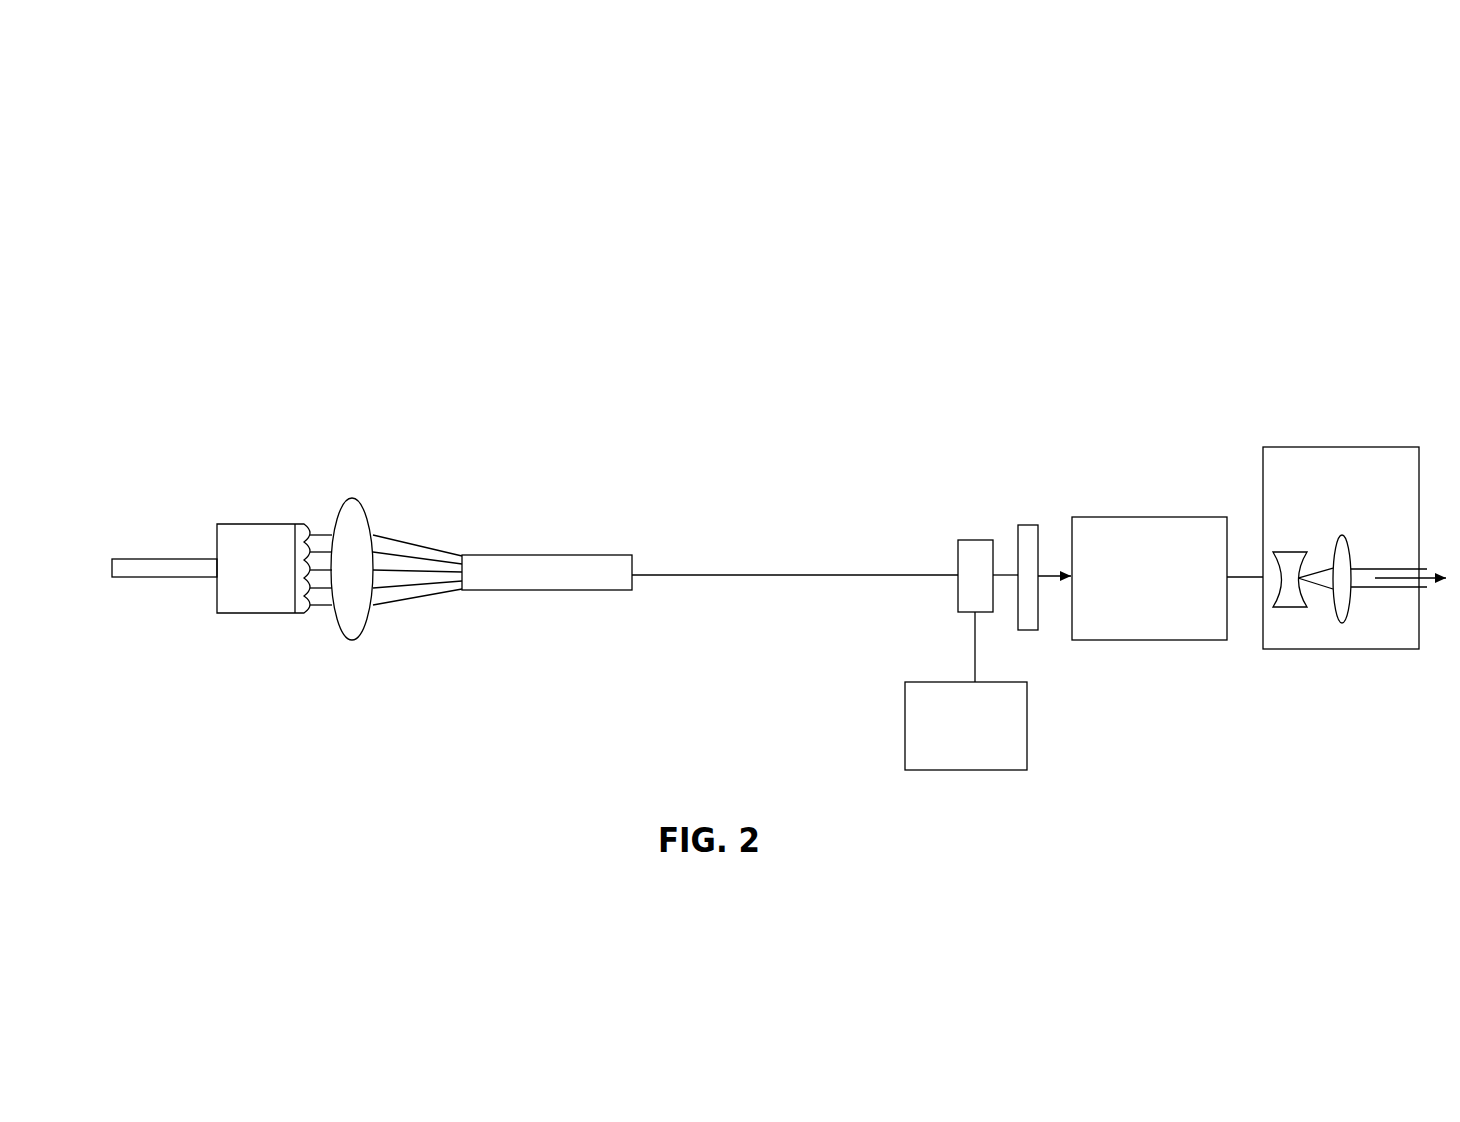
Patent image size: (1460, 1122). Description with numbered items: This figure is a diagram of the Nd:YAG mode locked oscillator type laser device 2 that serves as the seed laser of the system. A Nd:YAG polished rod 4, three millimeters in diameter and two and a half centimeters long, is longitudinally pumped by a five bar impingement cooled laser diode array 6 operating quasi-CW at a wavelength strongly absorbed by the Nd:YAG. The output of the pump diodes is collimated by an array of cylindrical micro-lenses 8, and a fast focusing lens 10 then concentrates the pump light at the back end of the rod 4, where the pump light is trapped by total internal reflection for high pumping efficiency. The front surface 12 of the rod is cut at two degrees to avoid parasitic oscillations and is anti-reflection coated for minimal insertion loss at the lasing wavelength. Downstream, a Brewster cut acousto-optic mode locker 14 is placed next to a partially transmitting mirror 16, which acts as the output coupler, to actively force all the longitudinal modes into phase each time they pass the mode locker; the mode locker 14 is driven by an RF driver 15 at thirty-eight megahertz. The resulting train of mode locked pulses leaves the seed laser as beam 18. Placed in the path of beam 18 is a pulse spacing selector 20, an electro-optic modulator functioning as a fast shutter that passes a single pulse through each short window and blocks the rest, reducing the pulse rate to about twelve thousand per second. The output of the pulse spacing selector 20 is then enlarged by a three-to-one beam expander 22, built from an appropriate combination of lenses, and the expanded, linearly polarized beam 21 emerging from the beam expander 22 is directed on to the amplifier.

The Nd:YAG mode locked oscillator type laser device 2 is at (858, 360).
The Nd:YAG polished rod 4 is at (528, 592).
The laser diode array 6 is at (263, 523).
The array of cylindrical micro-lenses 8 is at (306, 629).
The fast focusing lens 10 is at (366, 508).
The front surface 12 is at (643, 543).
The acousto-optic mode locker 14 is at (973, 540).
The RF driver 15 is at (893, 730).
The partially transmitting mirror 16 is at (1028, 525).
The beam 18 is at (1047, 580).
The pulse spacing selector 20 is at (1149, 516).
The linearly polarized beam 21 is at (1393, 582).
The beam expander 22 is at (1342, 447).